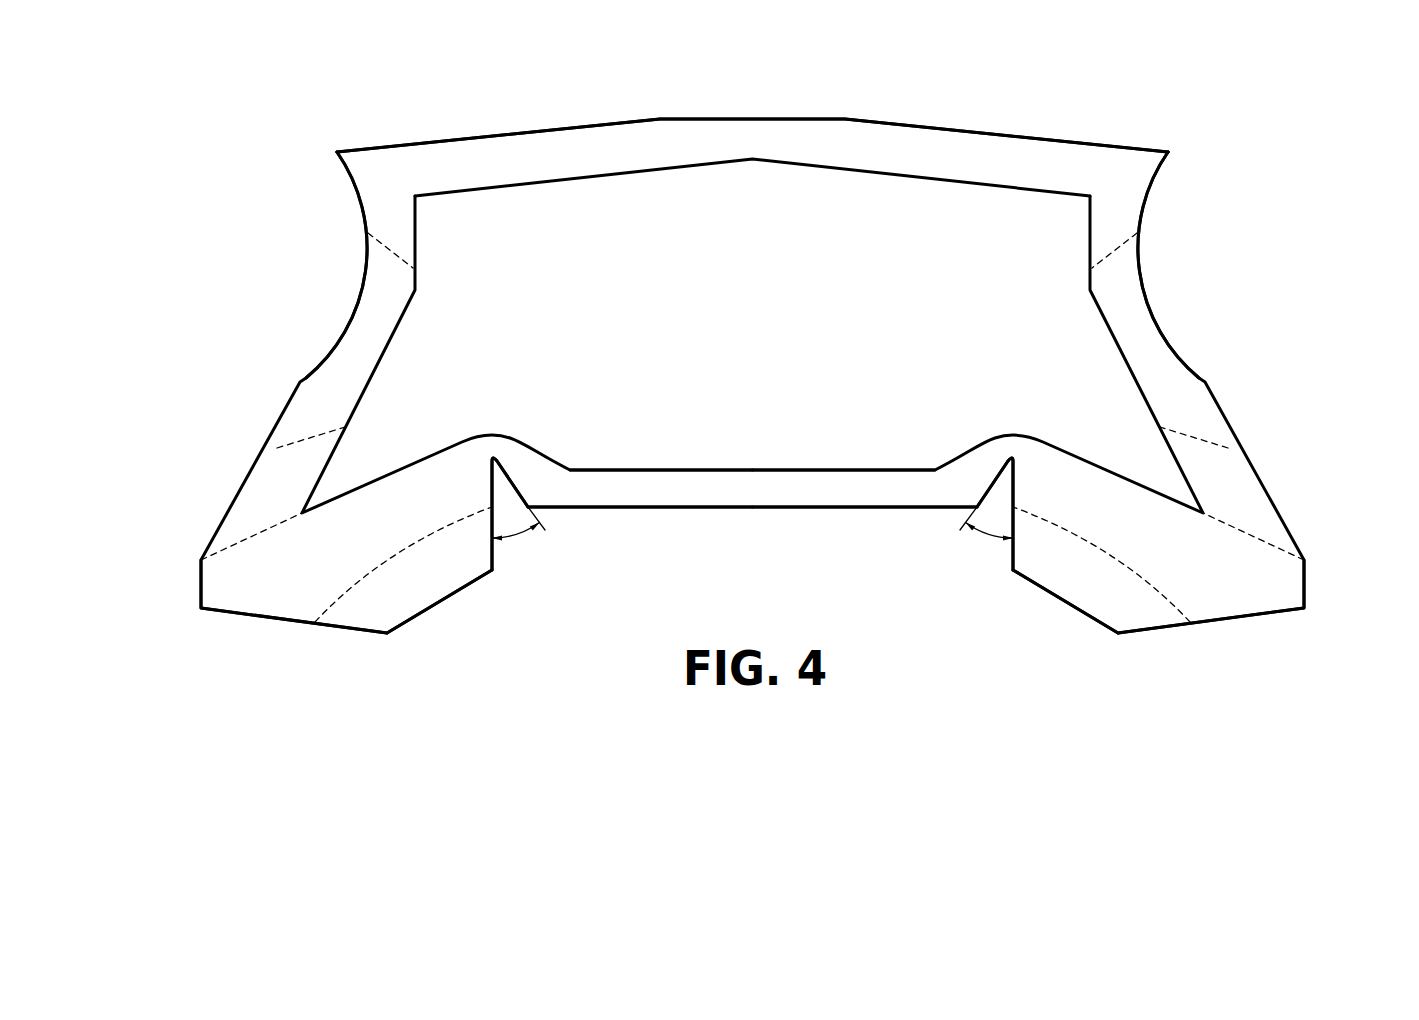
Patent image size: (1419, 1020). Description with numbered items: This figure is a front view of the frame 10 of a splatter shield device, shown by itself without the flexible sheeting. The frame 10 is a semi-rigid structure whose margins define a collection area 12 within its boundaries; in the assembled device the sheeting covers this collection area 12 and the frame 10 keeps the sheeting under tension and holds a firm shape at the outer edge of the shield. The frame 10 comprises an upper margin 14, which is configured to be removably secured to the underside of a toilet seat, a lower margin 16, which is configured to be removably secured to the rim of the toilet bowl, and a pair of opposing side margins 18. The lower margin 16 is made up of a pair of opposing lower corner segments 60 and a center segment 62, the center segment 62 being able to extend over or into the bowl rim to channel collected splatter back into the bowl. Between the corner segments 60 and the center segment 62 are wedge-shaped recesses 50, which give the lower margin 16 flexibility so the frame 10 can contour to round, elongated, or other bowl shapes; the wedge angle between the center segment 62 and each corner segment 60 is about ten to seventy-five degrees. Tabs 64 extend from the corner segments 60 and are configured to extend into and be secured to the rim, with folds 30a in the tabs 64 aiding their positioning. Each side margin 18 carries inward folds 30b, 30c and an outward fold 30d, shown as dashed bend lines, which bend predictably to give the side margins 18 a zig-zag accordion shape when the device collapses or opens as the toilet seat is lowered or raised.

The frame 10 is at (973, 130).
The collection area 12 is at (685, 293).
The upper margin 14 is at (850, 140).
The lower margin 16 is at (812, 497).
The side margins 18 is at (372, 322).
The folds 30a is at (342, 597).
The inward folds 30b is at (387, 245).
The inward folds 30c is at (233, 545).
The outward folds 30d is at (300, 440).
The recesses 50 is at (503, 553).
The lower corner segments 60 is at (252, 583).
The center segment 62 is at (662, 490).
The tabs 64 is at (402, 600).